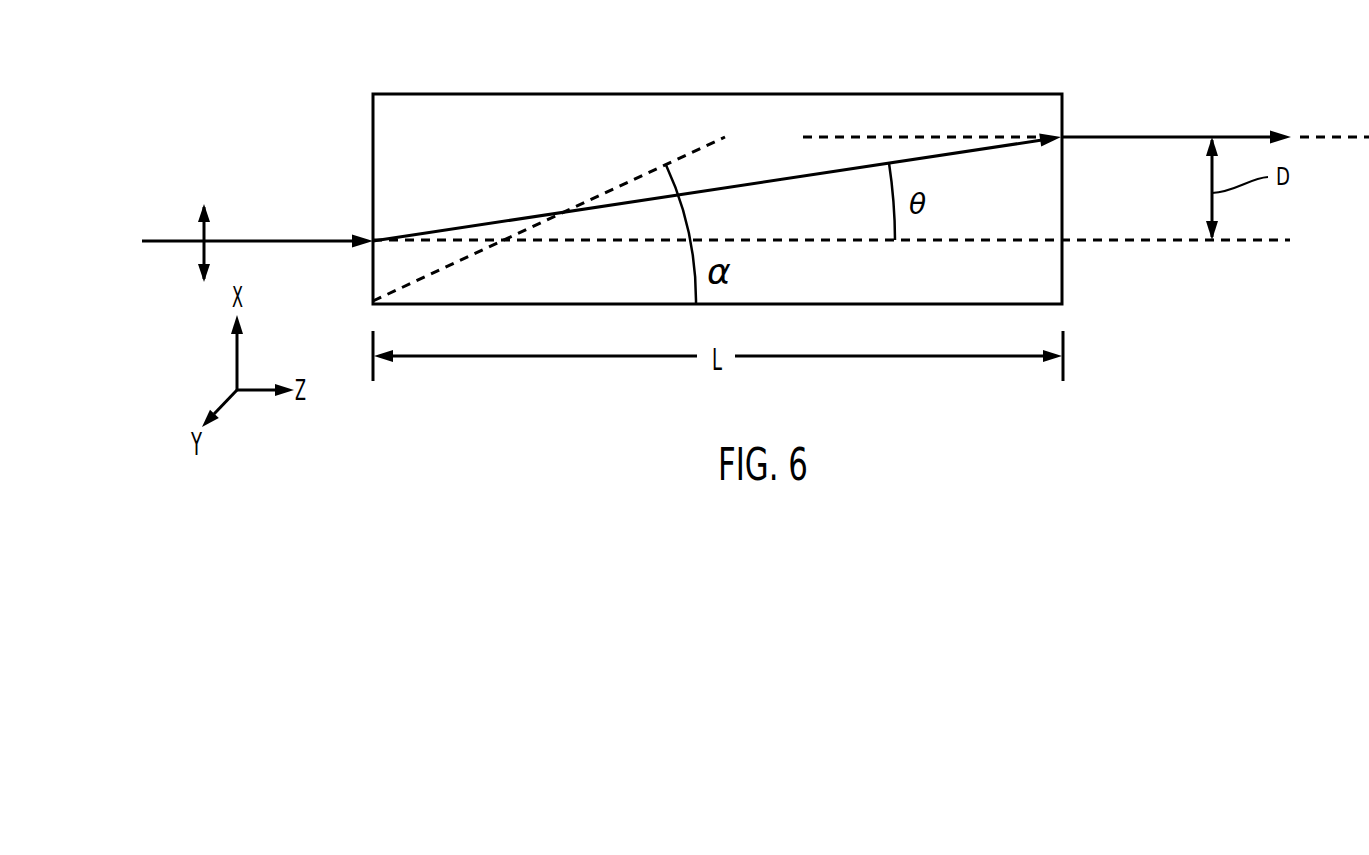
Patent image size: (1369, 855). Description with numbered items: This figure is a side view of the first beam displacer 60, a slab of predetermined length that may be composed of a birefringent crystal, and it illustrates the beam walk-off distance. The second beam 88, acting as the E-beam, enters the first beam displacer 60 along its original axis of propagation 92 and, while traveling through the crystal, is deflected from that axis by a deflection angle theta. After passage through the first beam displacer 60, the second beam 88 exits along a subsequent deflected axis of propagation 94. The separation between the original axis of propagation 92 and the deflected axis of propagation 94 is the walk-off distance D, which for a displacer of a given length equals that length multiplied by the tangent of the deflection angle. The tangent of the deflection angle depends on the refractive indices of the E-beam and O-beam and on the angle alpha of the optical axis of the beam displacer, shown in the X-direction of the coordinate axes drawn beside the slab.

The first beam displacer 60 is at (470, 113).
The second beam 88 is at (252, 241).
The original axis of propagation 92 is at (548, 240).
The deflected axis of propagation 94 is at (880, 137).